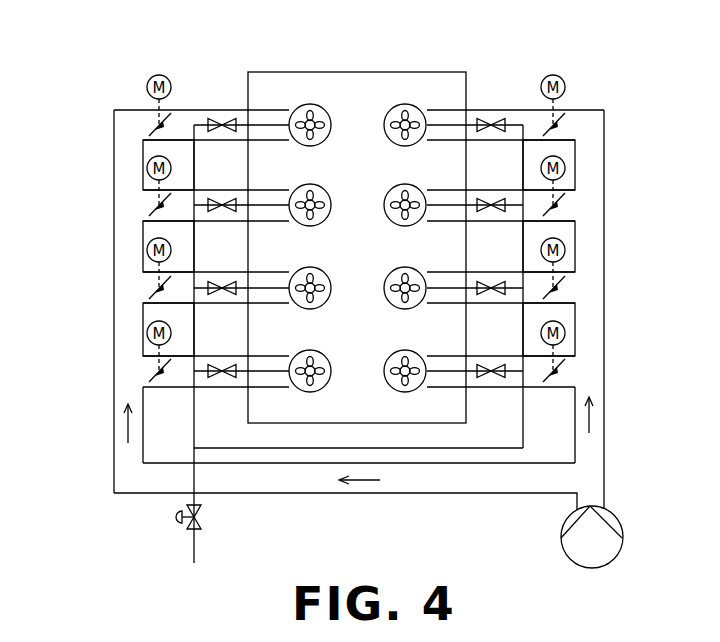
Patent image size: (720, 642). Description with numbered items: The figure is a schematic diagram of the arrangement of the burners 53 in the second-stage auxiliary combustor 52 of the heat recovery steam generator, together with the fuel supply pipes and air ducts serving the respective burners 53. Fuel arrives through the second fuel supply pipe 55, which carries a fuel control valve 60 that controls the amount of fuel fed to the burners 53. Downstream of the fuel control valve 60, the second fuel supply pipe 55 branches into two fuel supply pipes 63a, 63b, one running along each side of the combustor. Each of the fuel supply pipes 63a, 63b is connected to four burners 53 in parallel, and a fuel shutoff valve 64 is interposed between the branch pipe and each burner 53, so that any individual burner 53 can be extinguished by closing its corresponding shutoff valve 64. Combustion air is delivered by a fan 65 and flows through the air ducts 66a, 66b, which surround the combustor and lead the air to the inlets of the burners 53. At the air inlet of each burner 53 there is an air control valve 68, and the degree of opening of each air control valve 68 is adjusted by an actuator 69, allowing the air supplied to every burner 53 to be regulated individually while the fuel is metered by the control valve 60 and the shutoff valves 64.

The second-stage auxiliary combustor 52 is at (527, 60).
The burner 53 is at (332, 114).
The second fuel supply pipe 55 is at (195, 545).
The fuel control valve 60 is at (176, 513).
The fuel supply pipe 63a is at (522, 153).
The fuel supply pipe 63b is at (195, 232).
The fuel shutoff valve 64 is at (216, 199).
The fan 65 is at (623, 525).
The air duct 66a is at (604, 176).
The air duct 66b is at (113, 283).
The air control valve 68 is at (150, 212).
The actuator 69 is at (147, 169).